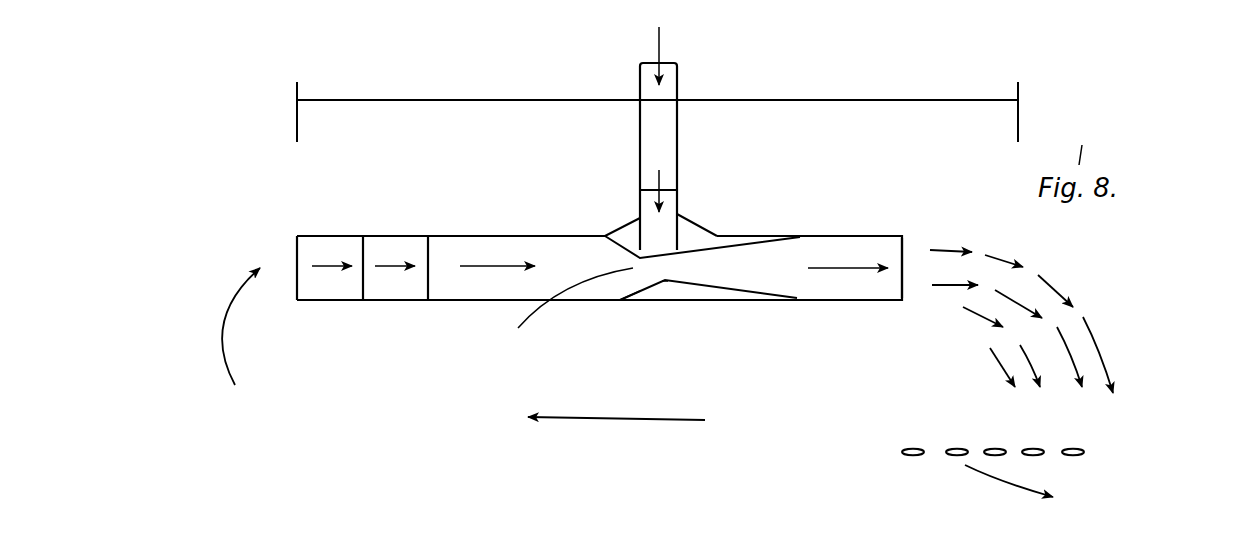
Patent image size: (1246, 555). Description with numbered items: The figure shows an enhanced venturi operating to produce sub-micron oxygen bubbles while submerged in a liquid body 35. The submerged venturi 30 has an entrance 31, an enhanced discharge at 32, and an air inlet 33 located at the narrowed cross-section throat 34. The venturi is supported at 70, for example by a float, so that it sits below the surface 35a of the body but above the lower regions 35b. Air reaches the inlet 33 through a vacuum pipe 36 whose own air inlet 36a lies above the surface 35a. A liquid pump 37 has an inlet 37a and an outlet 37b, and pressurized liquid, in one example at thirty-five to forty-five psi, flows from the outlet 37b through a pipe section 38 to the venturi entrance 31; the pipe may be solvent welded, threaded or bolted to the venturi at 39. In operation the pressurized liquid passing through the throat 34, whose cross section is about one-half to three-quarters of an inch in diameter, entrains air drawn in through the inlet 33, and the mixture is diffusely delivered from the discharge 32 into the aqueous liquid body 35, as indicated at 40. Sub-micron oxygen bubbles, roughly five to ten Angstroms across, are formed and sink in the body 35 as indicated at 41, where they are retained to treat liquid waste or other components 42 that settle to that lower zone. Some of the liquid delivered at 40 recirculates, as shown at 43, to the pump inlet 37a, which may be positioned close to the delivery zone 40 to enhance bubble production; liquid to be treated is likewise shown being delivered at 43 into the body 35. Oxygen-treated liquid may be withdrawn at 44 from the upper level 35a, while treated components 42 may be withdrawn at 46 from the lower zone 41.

The submerged venturi 30 is at (682, 292).
The entrance 31 is at (498, 283).
The enhanced discharge 32 is at (853, 245).
The air inlet 33 is at (677, 183).
The venturi narrowed cross-section throat 34 is at (660, 268).
The liquid body 35 is at (657, 119).
The surface 35a is at (884, 100).
The lower regions 35b is at (373, 426).
The vacuum pipe 36 is at (640, 133).
The air inlet 36a is at (658, 52).
The liquid pump 37 is at (324, 238).
The inlet 37a is at (297, 257).
The outlet 37b is at (388, 240).
The pipe section 38 is at (390, 302).
The connection 39 is at (430, 232).
The diffused delivery 40 is at (915, 255).
The sinking bubbles / lower zone 41 is at (983, 318).
The liquid waste or other components 42 is at (910, 447).
The recirculation / liquid delivery 43 is at (214, 342).
The treated liquid withdrawal 44 is at (1018, 106).
The treated components withdrawal 46 is at (973, 470).
The support 70 is at (627, 298).